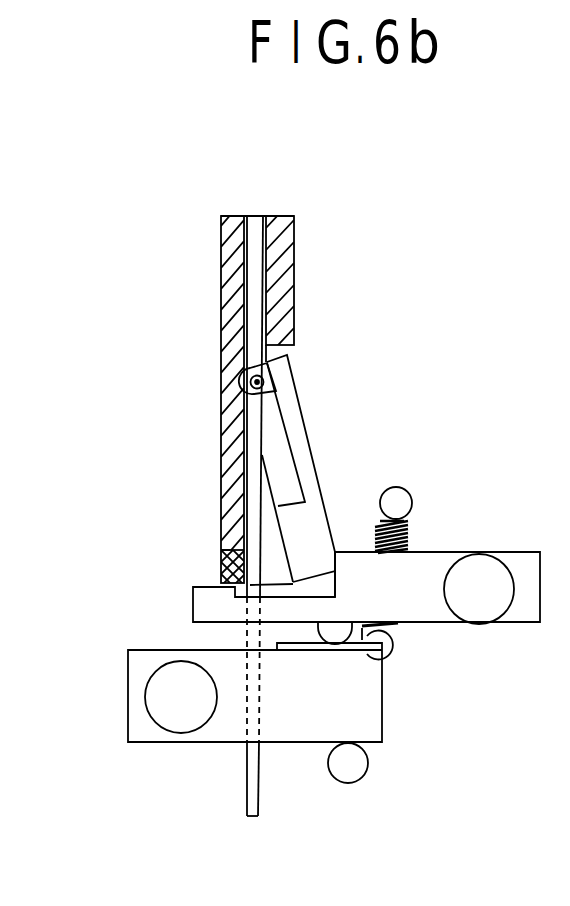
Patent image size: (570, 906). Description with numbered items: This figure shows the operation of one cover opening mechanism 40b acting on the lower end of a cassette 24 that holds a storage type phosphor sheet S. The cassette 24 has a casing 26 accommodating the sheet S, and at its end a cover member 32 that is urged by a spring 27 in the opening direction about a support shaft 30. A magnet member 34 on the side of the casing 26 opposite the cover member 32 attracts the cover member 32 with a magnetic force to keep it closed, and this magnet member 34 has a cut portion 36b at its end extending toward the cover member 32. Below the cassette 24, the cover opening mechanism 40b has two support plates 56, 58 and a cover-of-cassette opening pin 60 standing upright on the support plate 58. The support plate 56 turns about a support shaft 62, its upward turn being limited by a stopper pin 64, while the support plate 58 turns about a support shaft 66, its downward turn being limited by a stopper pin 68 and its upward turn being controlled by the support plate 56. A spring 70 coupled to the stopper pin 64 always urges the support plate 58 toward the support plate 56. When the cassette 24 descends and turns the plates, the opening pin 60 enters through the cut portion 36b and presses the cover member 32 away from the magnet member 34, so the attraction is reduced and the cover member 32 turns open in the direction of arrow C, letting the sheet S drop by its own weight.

The cassette 24 is at (200, 265).
The casing 26 is at (218, 453).
The spring 27 is at (270, 370).
The support shaft 30 is at (251, 382).
The cover member 32 is at (293, 417).
The magnet member 34 is at (225, 580).
The cut portion 36b is at (222, 551).
The cover opening mechanism 40b is at (287, 677).
The support plate 56 is at (438, 610).
The support plate 58 is at (370, 705).
The cover-of-cassette opening pin 60 is at (220, 642).
The support shaft 62 is at (493, 570).
The stopper pin 64 is at (392, 490).
The support shaft 66 is at (177, 722).
The stopper pin 68 is at (350, 768).
The spring 70 is at (410, 532).
The storage type phosphor sheet S is at (256, 277).
The arrow C is at (307, 483).